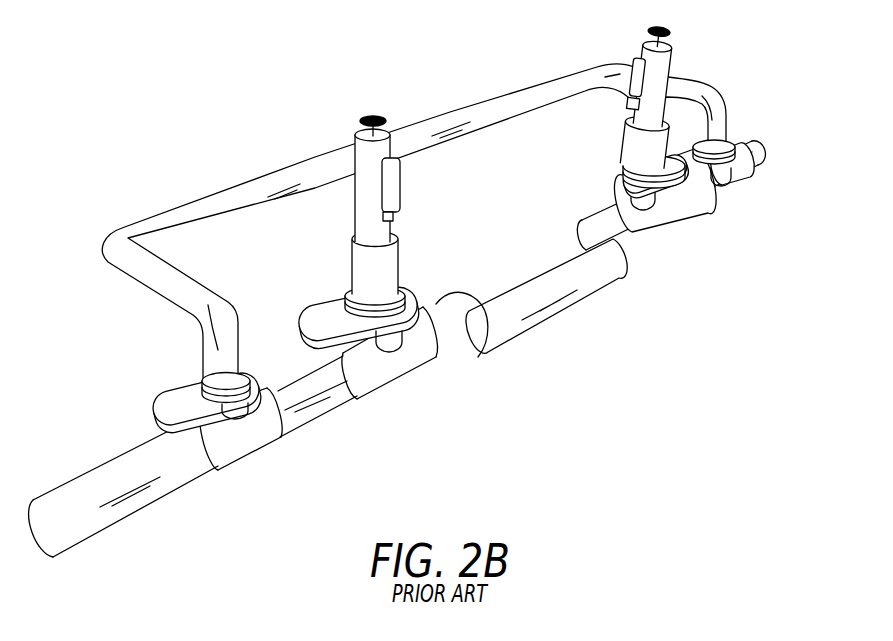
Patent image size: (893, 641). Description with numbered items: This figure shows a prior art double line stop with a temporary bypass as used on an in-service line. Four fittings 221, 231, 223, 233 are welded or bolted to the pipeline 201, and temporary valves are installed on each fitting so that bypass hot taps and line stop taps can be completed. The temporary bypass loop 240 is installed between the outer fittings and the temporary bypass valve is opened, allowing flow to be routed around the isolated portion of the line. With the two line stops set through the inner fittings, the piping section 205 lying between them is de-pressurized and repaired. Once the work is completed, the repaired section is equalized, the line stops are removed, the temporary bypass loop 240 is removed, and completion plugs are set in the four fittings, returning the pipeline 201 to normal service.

The pipeline 201 is at (76, 545).
The piping section 205 is at (560, 313).
The fitting 221 is at (393, 370).
The fitting 223 is at (650, 230).
The fitting 231 is at (244, 457).
The fitting 233 is at (720, 190).
The bypass loop 240 is at (246, 182).